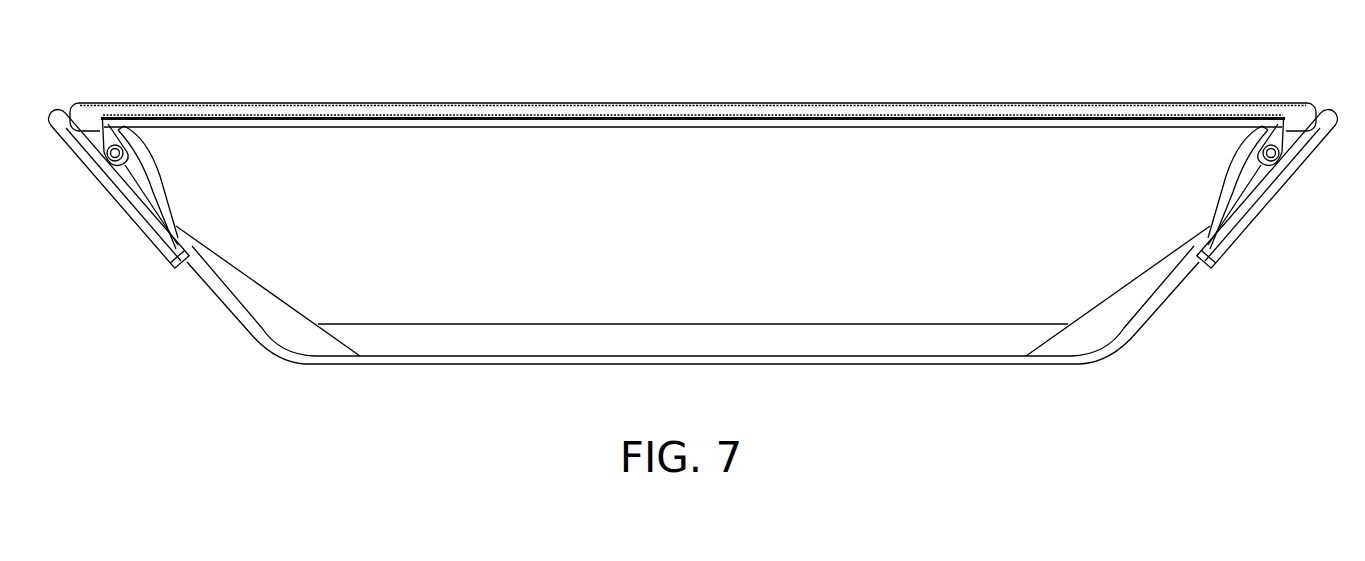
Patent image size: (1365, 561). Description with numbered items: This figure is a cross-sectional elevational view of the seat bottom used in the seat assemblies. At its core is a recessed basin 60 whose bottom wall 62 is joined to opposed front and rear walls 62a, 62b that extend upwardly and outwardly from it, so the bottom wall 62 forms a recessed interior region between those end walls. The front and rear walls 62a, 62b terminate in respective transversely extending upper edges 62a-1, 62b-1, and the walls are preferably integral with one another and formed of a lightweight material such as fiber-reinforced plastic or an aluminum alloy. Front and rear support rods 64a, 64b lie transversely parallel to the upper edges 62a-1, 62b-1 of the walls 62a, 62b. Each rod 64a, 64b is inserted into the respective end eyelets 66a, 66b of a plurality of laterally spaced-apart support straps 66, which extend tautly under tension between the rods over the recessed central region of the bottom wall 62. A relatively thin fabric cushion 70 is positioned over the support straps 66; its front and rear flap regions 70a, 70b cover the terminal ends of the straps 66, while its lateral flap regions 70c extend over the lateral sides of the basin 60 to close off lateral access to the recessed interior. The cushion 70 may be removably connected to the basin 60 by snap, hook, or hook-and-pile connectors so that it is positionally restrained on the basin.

The recessed basin 60 is at (493, 322).
The bottom wall 62 is at (555, 360).
The front wall 62a is at (215, 278).
The rear wall 62b is at (1171, 278).
The upper edge of front wall 62a-1 is at (121, 125).
The upper edge of rear wall 62b-1 is at (1265, 125).
The front support rod 64a is at (106, 158).
The rear support rod 64b is at (1280, 158).
The support strap 66 is at (442, 122).
The front end eyelet 66a is at (122, 124).
The rear end eyelet 66b is at (1264, 124).
The fabric cushion 70 is at (851, 90).
The front flap region 70a is at (140, 226).
The rear flap region 70b is at (1246, 226).
The lateral flap region 70c is at (551, 110).